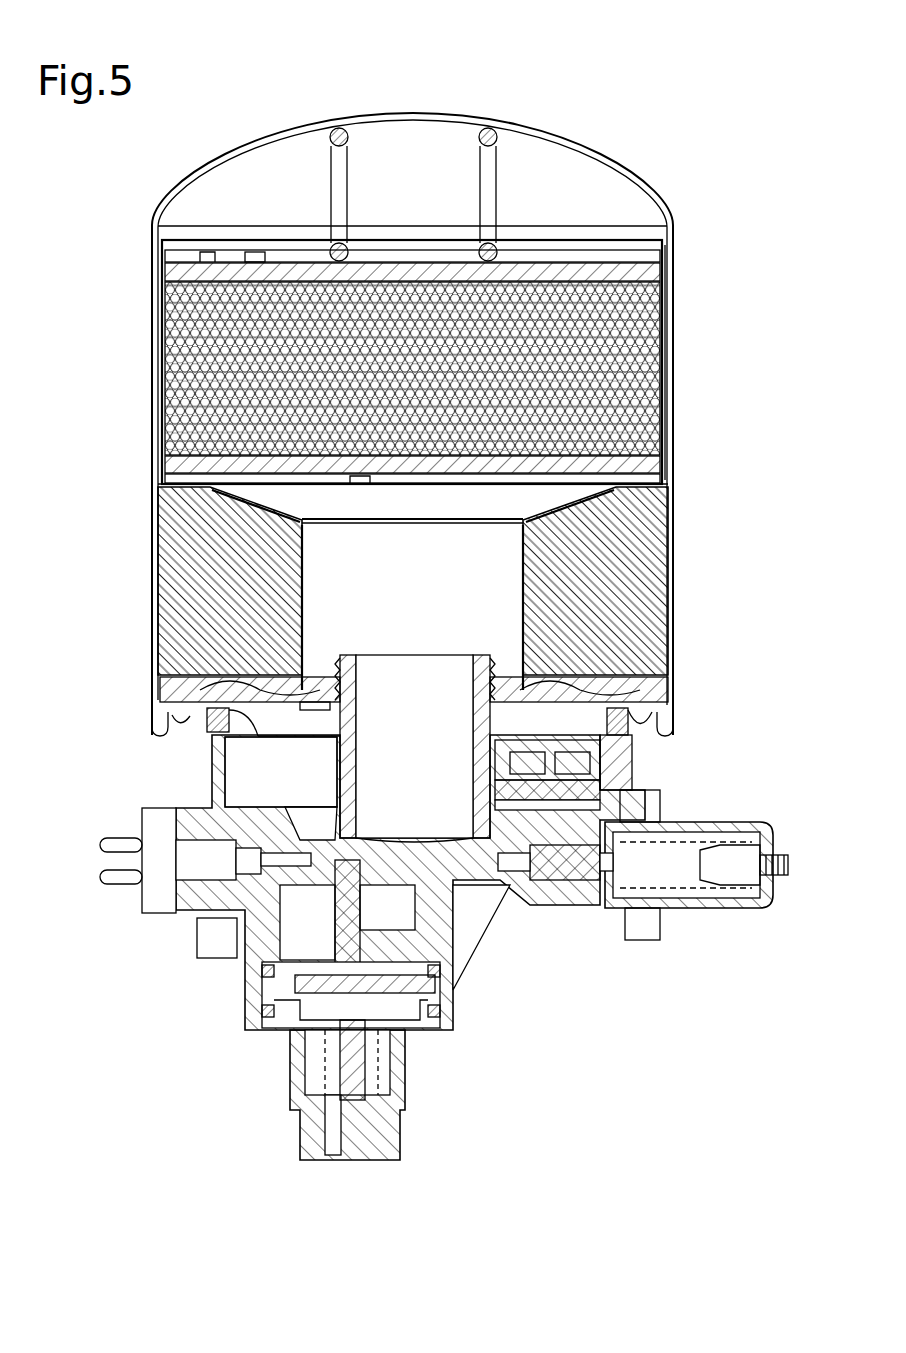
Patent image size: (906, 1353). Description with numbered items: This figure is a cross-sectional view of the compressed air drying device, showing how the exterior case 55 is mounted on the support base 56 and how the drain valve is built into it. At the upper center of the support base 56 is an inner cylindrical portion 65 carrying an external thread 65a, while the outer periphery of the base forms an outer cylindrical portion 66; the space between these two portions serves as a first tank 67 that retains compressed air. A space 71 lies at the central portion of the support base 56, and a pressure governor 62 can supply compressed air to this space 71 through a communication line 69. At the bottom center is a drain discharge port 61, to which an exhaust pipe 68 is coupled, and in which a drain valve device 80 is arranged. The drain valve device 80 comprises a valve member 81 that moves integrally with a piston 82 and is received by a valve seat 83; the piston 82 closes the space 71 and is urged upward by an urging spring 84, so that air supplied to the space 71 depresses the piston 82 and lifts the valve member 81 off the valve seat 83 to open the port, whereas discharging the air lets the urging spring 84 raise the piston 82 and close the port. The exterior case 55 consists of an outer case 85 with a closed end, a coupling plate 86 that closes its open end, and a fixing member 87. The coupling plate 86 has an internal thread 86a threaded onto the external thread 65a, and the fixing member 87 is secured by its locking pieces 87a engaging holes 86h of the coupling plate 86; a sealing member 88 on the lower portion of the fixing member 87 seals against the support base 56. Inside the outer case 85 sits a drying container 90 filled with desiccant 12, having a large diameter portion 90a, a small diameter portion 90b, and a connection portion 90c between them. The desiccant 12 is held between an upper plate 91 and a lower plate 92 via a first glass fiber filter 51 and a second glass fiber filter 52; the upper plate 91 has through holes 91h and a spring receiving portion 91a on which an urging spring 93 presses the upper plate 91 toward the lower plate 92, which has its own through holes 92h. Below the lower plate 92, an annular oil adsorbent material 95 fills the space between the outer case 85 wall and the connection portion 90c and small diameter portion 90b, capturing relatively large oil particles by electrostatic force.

The desiccant 12 is at (160, 365).
The first glass fiber filter 51 is at (160, 270).
The second glass fiber filter 52 is at (160, 462).
The exterior case 55 is at (676, 234).
The support base 56 is at (632, 733).
The drain discharge port 61 is at (420, 1035).
The pressure governor 62 is at (740, 821).
The inner cylindrical portion 65 is at (334, 775).
The external thread 65a is at (338, 667).
The outer cylindrical portion 66 is at (634, 776).
The first tank 67 is at (246, 778).
The exhaust pipe 68 is at (405, 1125).
The communication line 69 is at (436, 853).
The space 71 is at (372, 849).
The drain valve device 80 is at (486, 1073).
The valve member 81 is at (266, 1013).
The piston 82 is at (351, 944).
The valve seat 83 is at (262, 987).
The urging spring 84 is at (320, 1069).
The outer case 85 is at (674, 559).
The coupling plate 86 is at (666, 691).
The internal thread 86a is at (492, 667).
The holes 86h is at (322, 721).
The fixing member 87 is at (180, 725).
The locking pieces 87a is at (256, 727).
The sealing member 88 is at (208, 731).
The drying container 90 is at (668, 288).
The large diameter portion 90a is at (668, 363).
The small diameter portion 90b is at (522, 589).
The connection portion 90c is at (560, 487).
The upper plate 91 is at (568, 256).
The spring receiving portion 91a is at (332, 254).
The through holes 91h is at (246, 256).
The lower plate 92 is at (440, 490).
The through holes 92h is at (360, 488).
The urging spring 93 is at (349, 135).
The oil adsorbent material 95 is at (666, 609).